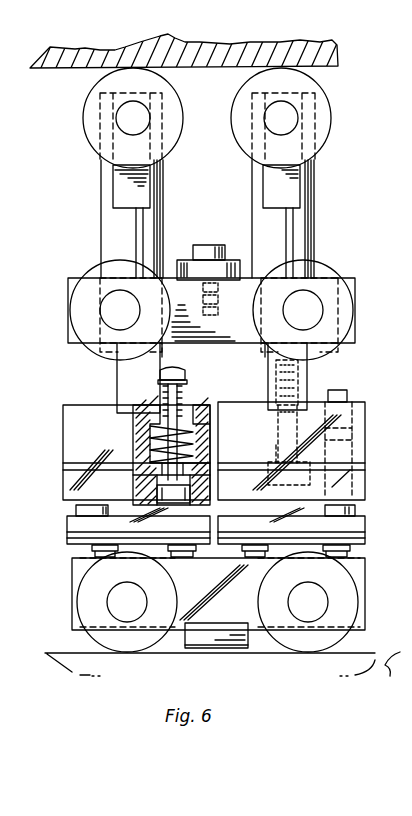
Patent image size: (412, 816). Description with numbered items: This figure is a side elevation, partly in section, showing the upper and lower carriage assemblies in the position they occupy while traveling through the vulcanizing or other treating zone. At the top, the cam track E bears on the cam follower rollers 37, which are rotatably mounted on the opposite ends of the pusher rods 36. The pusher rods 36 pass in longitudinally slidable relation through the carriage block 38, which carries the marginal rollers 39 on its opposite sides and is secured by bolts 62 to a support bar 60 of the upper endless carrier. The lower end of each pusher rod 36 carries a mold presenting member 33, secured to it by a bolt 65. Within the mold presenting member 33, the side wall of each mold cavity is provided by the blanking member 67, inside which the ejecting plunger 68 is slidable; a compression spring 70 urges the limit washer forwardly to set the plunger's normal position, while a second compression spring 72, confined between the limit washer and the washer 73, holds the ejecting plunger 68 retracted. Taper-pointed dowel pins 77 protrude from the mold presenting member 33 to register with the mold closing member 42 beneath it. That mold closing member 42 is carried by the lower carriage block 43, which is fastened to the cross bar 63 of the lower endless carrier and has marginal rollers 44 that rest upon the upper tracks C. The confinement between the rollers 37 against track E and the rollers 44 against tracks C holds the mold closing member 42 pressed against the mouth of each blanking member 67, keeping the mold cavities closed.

The cam track E is at (48, 69).
The cam follower rollers 37 is at (232, 128).
The pusher rods 36 is at (101, 206).
The carriage blocks 38 is at (228, 343).
The marginal rollers 39 is at (100, 355).
The support bars 60 is at (232, 260).
The bolts 62 is at (201, 246).
The mold presenting members 33 is at (365, 420).
The compression spring 70 is at (146, 438).
The compression spring 72 is at (185, 393).
The washer 73 is at (185, 381).
The ejecting plunger 68 is at (192, 500).
The bolt 65 is at (277, 448).
The blanking member 67 is at (75, 512).
The dowel pins 77 is at (362, 510).
The mold closing members 42 is at (68, 534).
The carriage blocks 43 is at (78, 577).
The marginal rollers 44 is at (106, 641).
The cross bar 63 is at (205, 650).
The upper tracks C is at (224, 673).